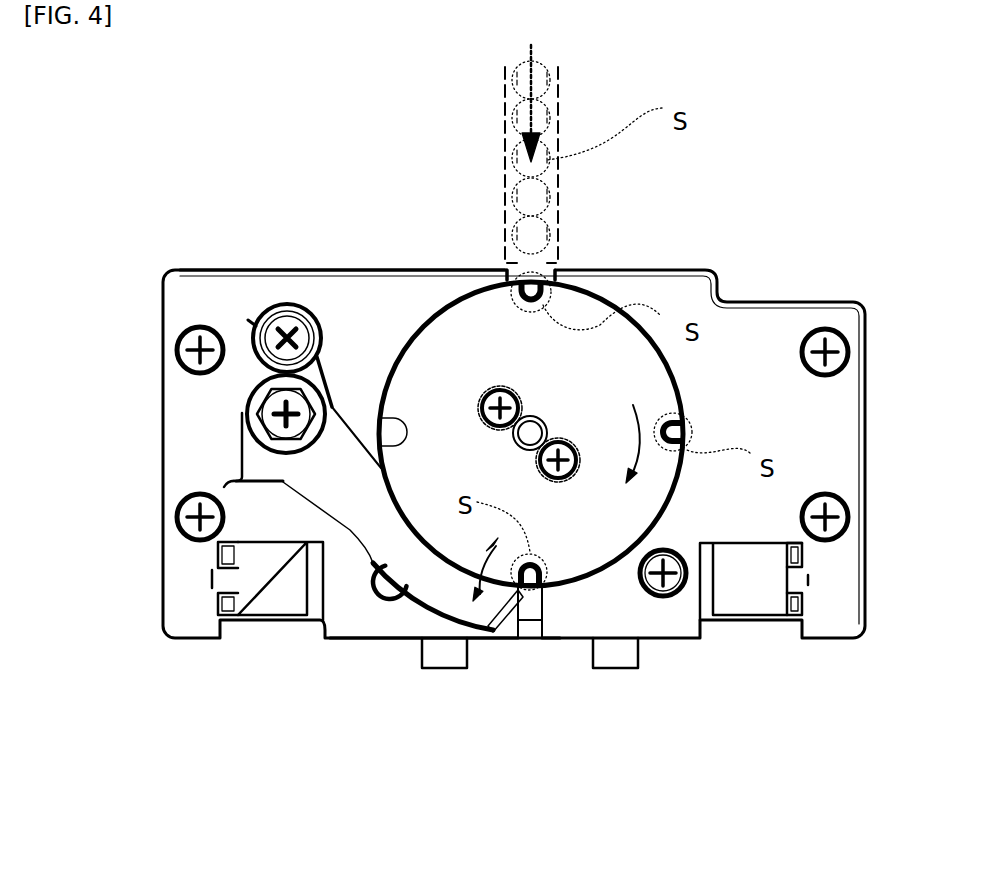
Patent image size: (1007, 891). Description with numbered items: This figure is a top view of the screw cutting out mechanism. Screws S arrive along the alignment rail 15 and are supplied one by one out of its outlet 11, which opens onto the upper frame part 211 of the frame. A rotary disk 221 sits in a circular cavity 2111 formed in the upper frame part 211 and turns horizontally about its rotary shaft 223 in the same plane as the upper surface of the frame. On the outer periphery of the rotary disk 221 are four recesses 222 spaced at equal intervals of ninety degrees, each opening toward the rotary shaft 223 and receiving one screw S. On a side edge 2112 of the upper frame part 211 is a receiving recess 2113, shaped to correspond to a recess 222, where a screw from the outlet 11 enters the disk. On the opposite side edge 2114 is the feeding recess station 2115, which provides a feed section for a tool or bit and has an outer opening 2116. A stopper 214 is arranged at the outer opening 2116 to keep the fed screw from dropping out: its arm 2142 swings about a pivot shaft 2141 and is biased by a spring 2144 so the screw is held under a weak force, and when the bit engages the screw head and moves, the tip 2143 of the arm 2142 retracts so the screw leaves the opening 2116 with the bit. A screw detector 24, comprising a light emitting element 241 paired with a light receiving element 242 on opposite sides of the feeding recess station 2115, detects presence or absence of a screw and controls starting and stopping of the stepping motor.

The outlet 11 is at (505, 263).
The alignment rail 15 is at (507, 128).
The upper frame part 211 is at (208, 268).
The circular cavity 2111 is at (460, 293).
The side edge 2112 is at (302, 204).
The receiving recess 2113 is at (595, 254).
The opposite side edge 2114 is at (358, 627).
The feeding recess station 2115 is at (540, 642).
The outer opening 2116 is at (522, 642).
The stopper 214 is at (294, 519).
The pivot shaft 2141 is at (255, 435).
The arm 2142 is at (372, 545).
The tip 2143 is at (480, 633).
The spring 2144 is at (247, 395).
The rotary disk 221 is at (490, 363).
The recess 222 is at (543, 287).
The rotary shaft 223 is at (533, 433).
The screw detector 24 is at (489, 635).
The light emitting element 241 is at (754, 581).
The second sensor 242 is at (267, 581).